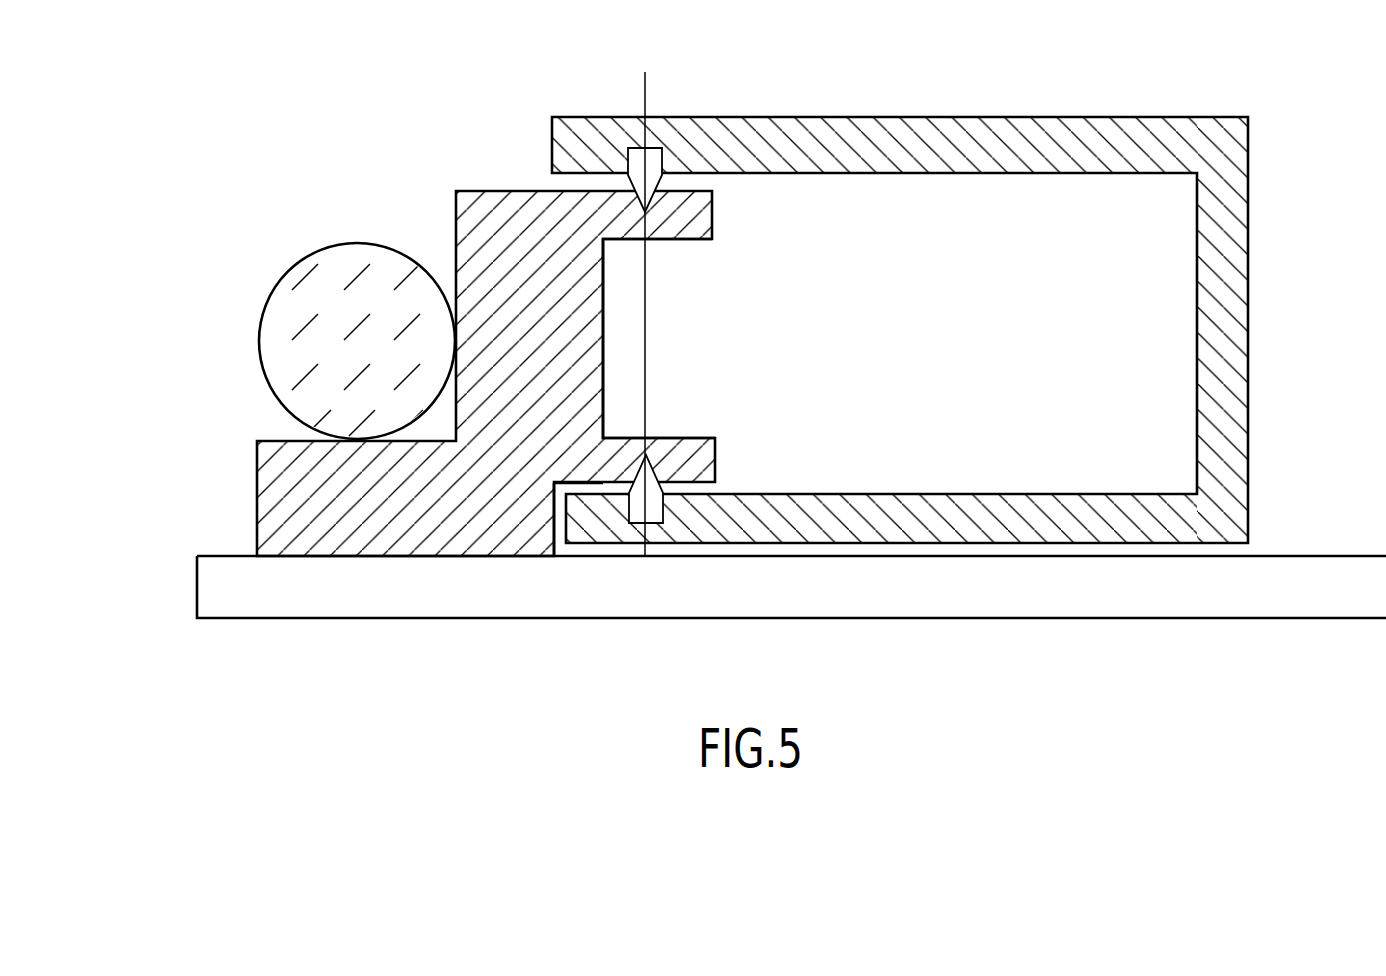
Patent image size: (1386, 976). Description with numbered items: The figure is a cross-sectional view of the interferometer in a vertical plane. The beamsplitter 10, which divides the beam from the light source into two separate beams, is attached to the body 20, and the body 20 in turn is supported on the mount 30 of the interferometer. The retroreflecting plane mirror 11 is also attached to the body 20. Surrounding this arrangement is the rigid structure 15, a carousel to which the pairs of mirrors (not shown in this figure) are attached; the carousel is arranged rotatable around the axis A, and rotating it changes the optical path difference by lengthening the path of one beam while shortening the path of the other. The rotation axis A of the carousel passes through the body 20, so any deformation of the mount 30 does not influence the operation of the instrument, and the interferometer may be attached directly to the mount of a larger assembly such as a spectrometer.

The beamsplitter 10 is at (270, 295).
The plane mirror 11 is at (647, 363).
The rigid structure 15 is at (1197, 360).
The body 20 is at (257, 500).
The mount 30 is at (718, 619).
The axis A is at (643, 93).